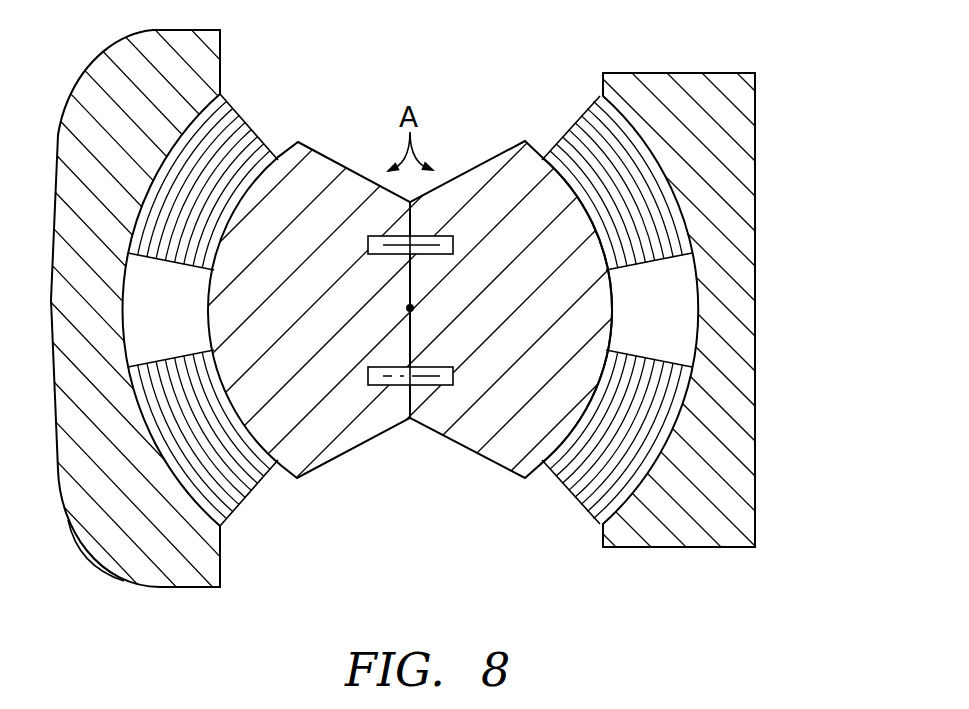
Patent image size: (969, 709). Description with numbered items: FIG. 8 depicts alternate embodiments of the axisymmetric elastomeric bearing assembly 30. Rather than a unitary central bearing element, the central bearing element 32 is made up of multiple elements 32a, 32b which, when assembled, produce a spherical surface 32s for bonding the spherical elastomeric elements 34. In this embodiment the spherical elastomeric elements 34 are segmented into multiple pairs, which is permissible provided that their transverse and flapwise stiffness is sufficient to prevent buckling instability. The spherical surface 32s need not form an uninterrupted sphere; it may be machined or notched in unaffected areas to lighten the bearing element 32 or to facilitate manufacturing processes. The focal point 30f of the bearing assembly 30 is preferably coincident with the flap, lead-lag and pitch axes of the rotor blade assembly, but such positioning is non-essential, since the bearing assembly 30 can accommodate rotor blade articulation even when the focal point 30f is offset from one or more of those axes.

The axisymmetric elastomeric bearing assembly 30 is at (482, 55).
The focal point 30f is at (412, 309).
The bearing element 32 is at (484, 354).
The central bearing element member 32a is at (352, 442).
The central bearing element member 32b is at (310, 518).
The spherical surface 32s is at (597, 387).
The spherical elastomeric elements 34 is at (235, 135).